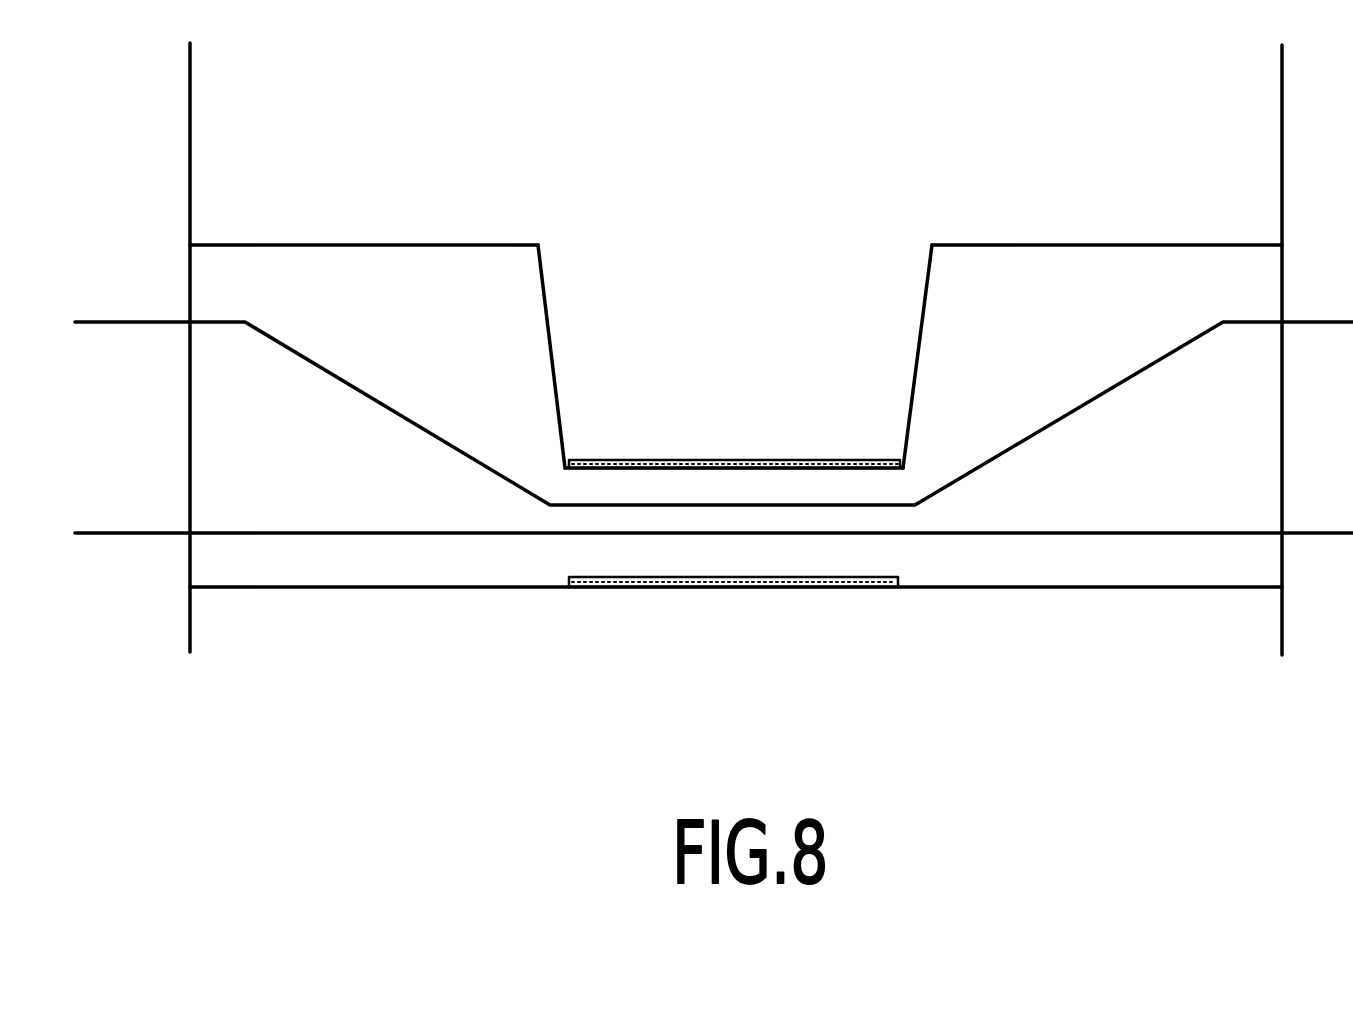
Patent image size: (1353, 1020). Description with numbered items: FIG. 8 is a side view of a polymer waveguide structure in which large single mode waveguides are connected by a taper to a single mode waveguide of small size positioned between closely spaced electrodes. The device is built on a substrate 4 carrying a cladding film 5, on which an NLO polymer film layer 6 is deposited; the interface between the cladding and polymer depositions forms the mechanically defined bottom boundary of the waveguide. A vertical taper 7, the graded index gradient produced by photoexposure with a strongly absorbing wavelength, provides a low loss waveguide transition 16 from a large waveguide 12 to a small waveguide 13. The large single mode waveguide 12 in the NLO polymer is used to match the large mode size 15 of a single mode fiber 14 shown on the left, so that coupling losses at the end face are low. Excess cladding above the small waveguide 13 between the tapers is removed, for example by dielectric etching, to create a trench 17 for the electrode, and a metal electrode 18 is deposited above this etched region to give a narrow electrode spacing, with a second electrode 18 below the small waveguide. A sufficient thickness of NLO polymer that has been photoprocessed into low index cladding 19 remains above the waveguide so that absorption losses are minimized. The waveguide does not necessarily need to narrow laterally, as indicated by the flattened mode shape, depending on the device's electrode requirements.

The substrate 4 is at (292, 618).
The cladding film 5 is at (387, 565).
The NLO polymer film layer 6 is at (475, 297).
The vertical taper 7 is at (352, 383).
The large waveguide 12 is at (228, 397).
The small waveguide 13 is at (602, 527).
The single mode fiber 14 is at (162, 117).
The large mode size 15 is at (128, 490).
The waveguide transition 16 is at (390, 470).
The trench 17 is at (558, 397).
The metal electrode 18 is at (667, 463).
The low index cladding 19 is at (773, 488).